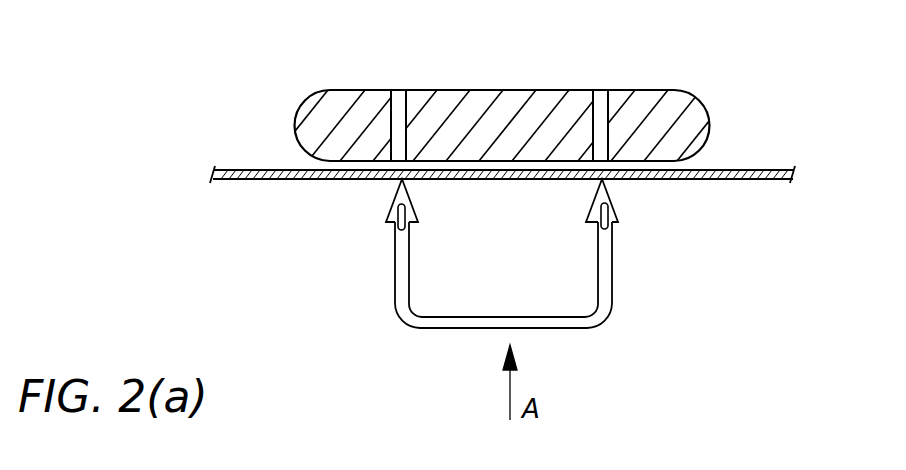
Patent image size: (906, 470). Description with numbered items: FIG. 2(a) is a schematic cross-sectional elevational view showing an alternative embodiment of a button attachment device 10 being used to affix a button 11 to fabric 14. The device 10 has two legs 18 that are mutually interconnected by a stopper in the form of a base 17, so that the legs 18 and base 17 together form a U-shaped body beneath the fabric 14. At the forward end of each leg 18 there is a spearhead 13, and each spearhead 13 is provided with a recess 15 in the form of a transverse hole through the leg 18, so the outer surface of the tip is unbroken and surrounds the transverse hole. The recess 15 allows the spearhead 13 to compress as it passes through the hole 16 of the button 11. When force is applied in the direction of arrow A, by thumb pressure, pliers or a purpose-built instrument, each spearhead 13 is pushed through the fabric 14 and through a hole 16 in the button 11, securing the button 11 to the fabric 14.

The device 10 is at (502, 258).
The button 11 is at (683, 107).
The spearhead 13 is at (396, 190).
The fabric 14 is at (244, 167).
The recess 15 is at (612, 206).
The hole 16 is at (400, 100).
The base 17 is at (396, 300).
The leg 18 is at (605, 272).